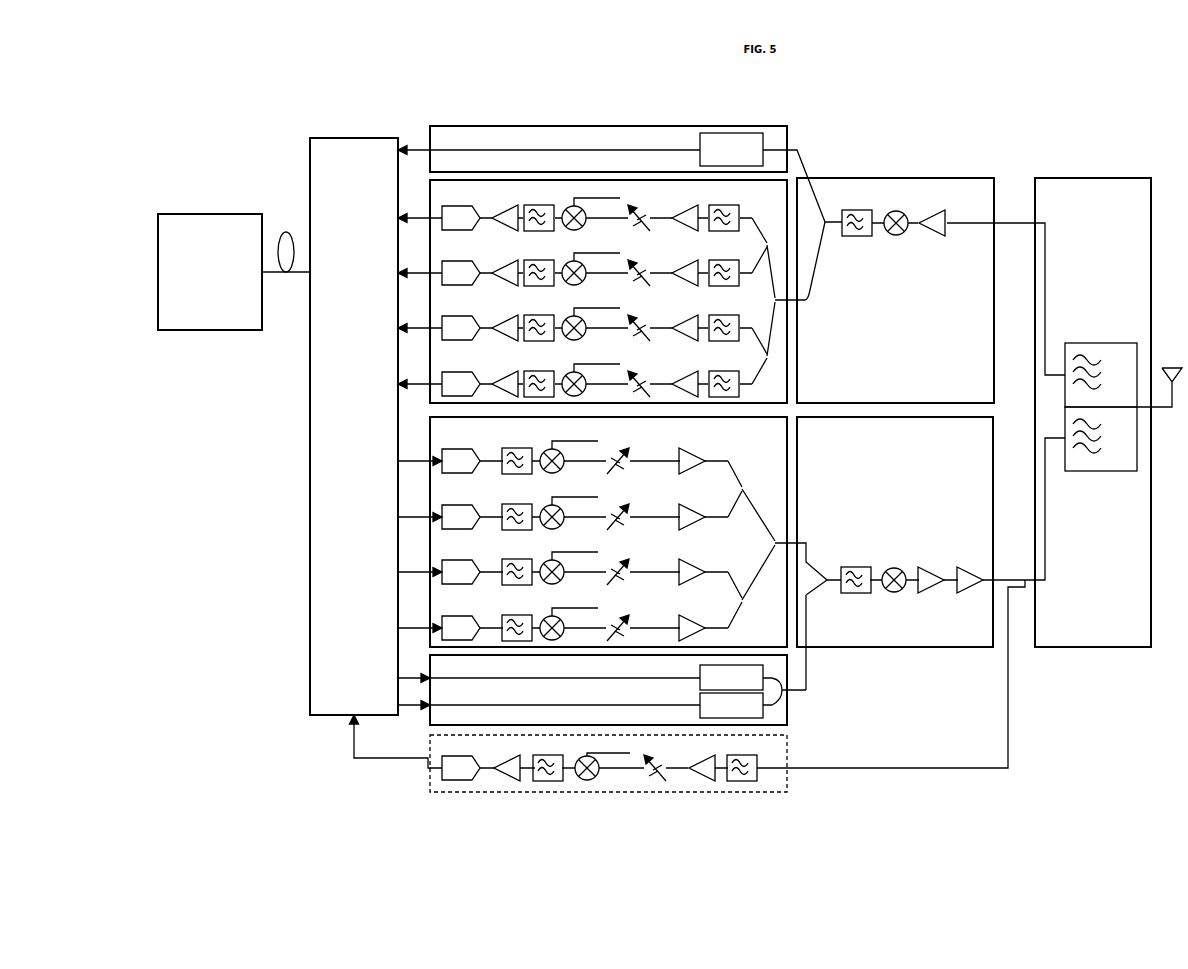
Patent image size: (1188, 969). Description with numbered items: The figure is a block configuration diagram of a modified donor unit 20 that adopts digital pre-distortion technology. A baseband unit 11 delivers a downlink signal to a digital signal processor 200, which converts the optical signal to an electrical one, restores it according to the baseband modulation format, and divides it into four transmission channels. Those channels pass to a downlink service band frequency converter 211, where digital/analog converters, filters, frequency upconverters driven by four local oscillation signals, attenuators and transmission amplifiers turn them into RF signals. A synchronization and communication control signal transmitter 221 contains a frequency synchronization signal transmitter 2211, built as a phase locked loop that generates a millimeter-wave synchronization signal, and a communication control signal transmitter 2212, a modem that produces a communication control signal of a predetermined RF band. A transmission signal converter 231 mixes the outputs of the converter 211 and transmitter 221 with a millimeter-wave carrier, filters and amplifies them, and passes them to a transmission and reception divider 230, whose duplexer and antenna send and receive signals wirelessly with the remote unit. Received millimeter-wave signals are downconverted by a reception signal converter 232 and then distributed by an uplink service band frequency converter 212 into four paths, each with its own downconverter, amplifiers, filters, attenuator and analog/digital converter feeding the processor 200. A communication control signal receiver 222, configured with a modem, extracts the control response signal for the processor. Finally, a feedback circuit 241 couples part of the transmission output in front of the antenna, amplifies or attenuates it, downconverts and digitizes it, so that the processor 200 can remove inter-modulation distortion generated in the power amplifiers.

The donor unit 20 is at (262, 154).
The baseband unit 11 is at (208, 213).
The digital signal processor 200 is at (352, 137).
The uplink service band frequency converter 212 is at (540, 172).
The communication control signal receiver 222 is at (612, 127).
The reception signal converter 232 is at (900, 178).
The transmission and reception divider 230 is at (1100, 178).
The downlink service band frequency converter 211 is at (421, 650).
The transmission signal converter 231 is at (898, 648).
The synchronization and communication control signal transmitter 221 is at (793, 719).
The frequency synchronization signal transmitter 2211 is at (700, 672).
The communication control signal transmitter 2212 is at (700, 715).
The feedback circuit 241 is at (793, 742).